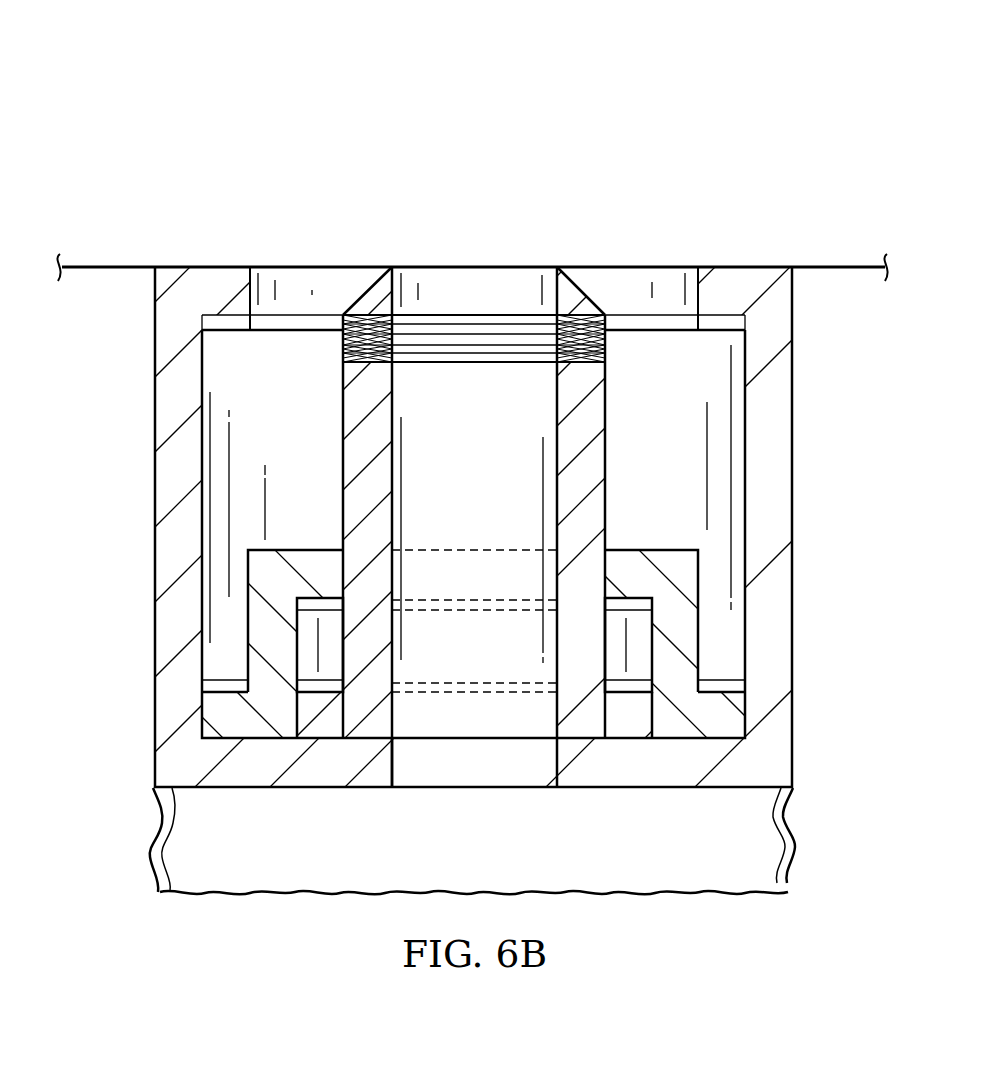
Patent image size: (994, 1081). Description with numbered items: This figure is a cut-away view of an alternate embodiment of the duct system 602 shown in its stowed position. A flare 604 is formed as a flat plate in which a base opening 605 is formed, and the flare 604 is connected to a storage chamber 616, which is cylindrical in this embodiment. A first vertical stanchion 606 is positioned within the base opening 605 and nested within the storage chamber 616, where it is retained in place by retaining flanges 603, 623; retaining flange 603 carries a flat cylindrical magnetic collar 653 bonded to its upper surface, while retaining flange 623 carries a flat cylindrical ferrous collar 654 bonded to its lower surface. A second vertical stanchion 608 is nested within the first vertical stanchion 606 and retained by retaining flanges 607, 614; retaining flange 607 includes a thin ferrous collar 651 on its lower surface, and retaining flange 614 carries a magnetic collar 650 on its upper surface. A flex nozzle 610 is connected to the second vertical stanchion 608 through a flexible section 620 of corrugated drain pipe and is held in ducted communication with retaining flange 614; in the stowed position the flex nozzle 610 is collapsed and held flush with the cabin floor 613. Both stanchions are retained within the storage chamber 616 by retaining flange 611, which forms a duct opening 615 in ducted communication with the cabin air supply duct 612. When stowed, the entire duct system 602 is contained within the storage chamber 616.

The duct system 602 is at (313, 80).
The retaining flange 603 is at (740, 722).
The flare 604 is at (213, 267).
The base opening 605 is at (288, 275).
The first vertical stanchion 606 is at (688, 625).
The retaining flange 607 is at (618, 556).
The second vertical stanchion 608 is at (610, 450).
The flex nozzle 610 is at (573, 292).
The retaining flange 611 is at (685, 770).
The cabin air supply duct 612 is at (797, 858).
The cabin floor 613 is at (843, 267).
The retaining flange 614 is at (578, 730).
The duct opening 615 is at (395, 765).
The storage chamber 616 is at (795, 532).
The flexible section 620 is at (343, 340).
The retaining flange 623 is at (742, 272).
The magnetic collar 650 is at (323, 683).
The ferrous collar 651 is at (307, 600).
The magnetic collar 653 is at (227, 688).
The ferrous collar 654 is at (333, 316).